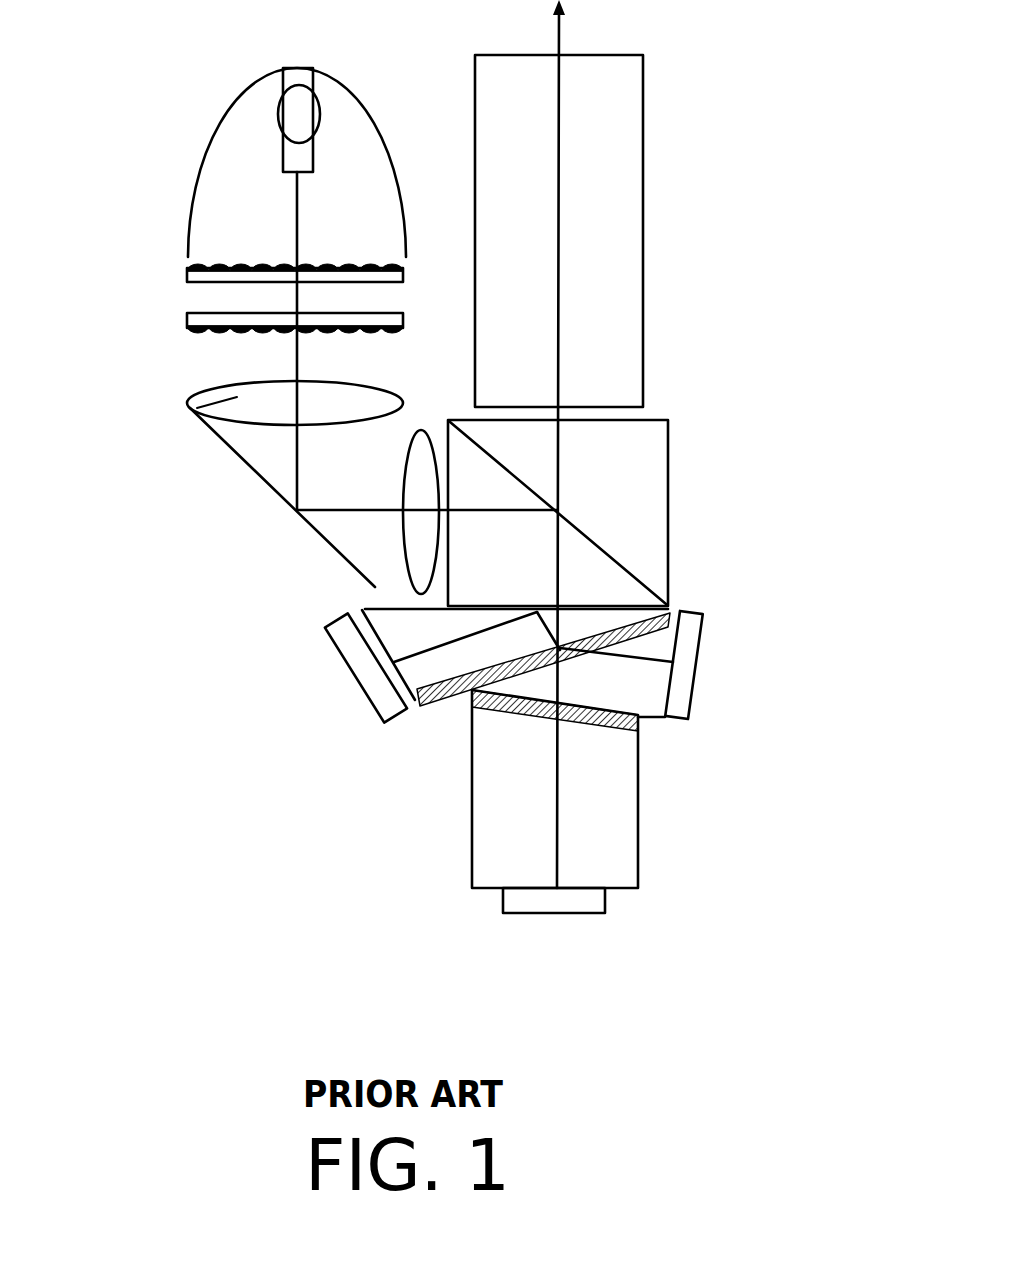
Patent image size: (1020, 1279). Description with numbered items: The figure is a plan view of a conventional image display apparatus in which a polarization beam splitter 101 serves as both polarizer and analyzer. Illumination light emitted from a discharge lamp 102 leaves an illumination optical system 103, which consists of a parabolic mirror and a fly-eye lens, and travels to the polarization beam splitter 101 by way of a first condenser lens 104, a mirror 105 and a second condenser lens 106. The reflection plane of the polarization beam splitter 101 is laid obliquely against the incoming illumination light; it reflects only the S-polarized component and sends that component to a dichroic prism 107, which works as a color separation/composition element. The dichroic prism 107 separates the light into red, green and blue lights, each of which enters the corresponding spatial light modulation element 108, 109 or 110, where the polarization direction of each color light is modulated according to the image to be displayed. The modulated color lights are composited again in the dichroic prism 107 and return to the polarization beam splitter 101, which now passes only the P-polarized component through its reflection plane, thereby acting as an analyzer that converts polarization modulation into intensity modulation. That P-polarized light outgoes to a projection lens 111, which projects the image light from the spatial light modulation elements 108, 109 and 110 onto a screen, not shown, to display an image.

The polarization beam splitter 101 is at (627, 503).
The discharge lamp 102 is at (288, 123).
The illumination optical system 103 is at (194, 190).
The first condenser lens 104 is at (187, 401).
The mirror 105 is at (255, 479).
The second condenser lens 106 is at (413, 568).
The dichroic prism 107 is at (472, 826).
The spatial light modulation element 108 is at (358, 687).
The spatial light modulation element 109 is at (695, 673).
The spatial light modulation element 110 is at (560, 913).
The projection lens 111 is at (643, 237).